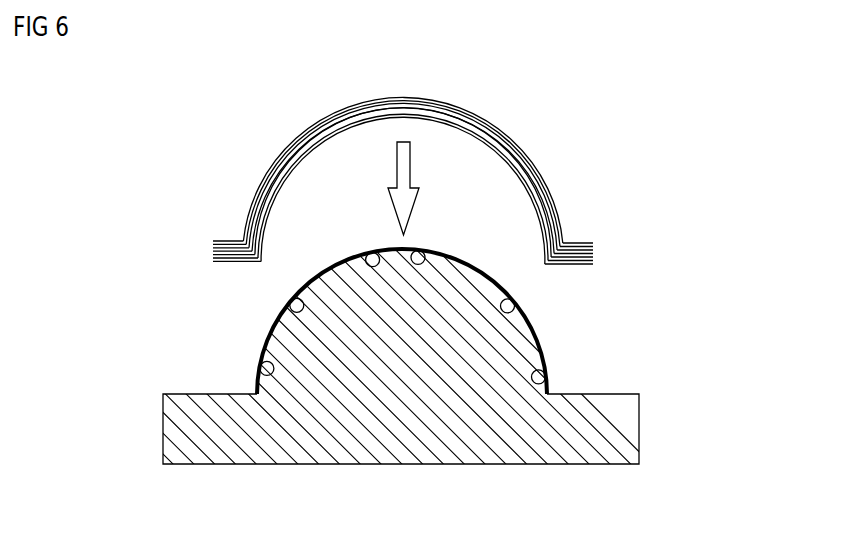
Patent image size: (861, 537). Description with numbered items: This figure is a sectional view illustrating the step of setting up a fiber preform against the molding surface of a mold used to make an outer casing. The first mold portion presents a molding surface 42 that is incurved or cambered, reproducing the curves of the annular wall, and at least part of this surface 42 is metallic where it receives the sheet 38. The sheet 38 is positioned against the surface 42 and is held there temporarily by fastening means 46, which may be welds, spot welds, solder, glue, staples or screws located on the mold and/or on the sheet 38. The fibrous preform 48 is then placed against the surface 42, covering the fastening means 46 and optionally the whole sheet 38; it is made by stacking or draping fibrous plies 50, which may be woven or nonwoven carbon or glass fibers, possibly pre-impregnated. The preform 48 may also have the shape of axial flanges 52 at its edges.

The sheet 38 is at (538, 337).
The molding surface 42 is at (358, 256).
The fastening means 46 is at (436, 252).
The fibrous preform 48 is at (402, 180).
The fibrous plies 50 is at (507, 134).
The axial flanges 52 is at (213, 241).